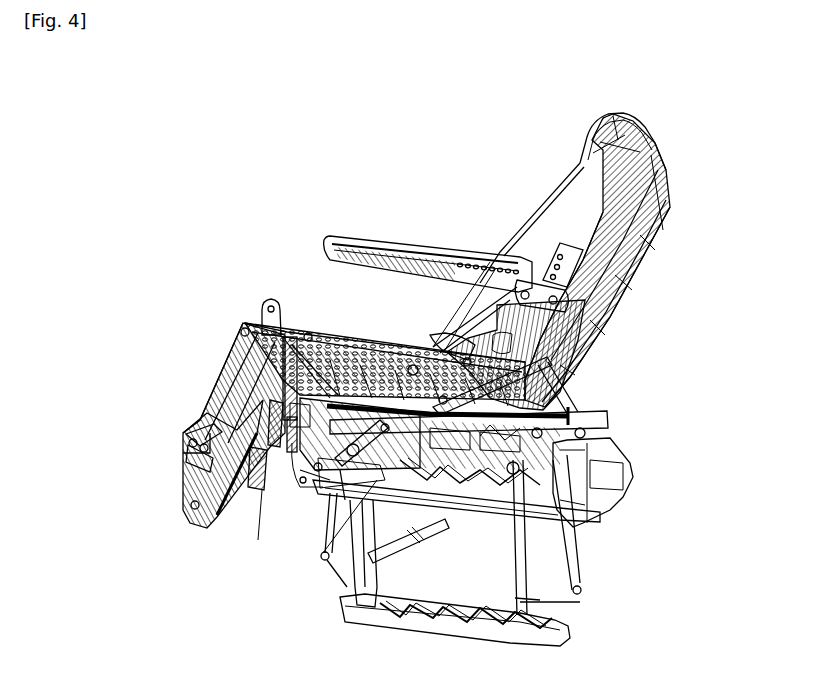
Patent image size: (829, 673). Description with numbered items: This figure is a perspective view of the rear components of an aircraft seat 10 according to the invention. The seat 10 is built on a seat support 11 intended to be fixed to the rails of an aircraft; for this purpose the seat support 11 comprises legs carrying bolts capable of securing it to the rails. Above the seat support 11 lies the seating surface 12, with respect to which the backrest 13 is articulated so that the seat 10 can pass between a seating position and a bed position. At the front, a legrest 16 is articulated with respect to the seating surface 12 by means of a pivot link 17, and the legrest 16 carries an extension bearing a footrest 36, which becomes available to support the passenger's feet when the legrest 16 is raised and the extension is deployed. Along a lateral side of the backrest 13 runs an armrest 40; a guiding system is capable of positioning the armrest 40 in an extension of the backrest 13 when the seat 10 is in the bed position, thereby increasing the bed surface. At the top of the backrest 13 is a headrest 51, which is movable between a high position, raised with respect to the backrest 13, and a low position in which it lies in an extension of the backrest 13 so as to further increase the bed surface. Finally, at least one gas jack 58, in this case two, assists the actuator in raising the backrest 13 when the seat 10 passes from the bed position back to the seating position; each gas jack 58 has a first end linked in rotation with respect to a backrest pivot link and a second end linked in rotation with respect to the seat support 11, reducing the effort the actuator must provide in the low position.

The seat 10 is at (222, 132).
The seat support 11 is at (347, 589).
The seating surface 12 is at (327, 337).
The backrest 13 is at (563, 220).
The legrest 16 is at (212, 402).
The pivot link 17 is at (267, 300).
The footrest 36 is at (185, 435).
The armrest 40 is at (402, 240).
The headrest 51 is at (615, 118).
The gas jack 58 is at (545, 388).